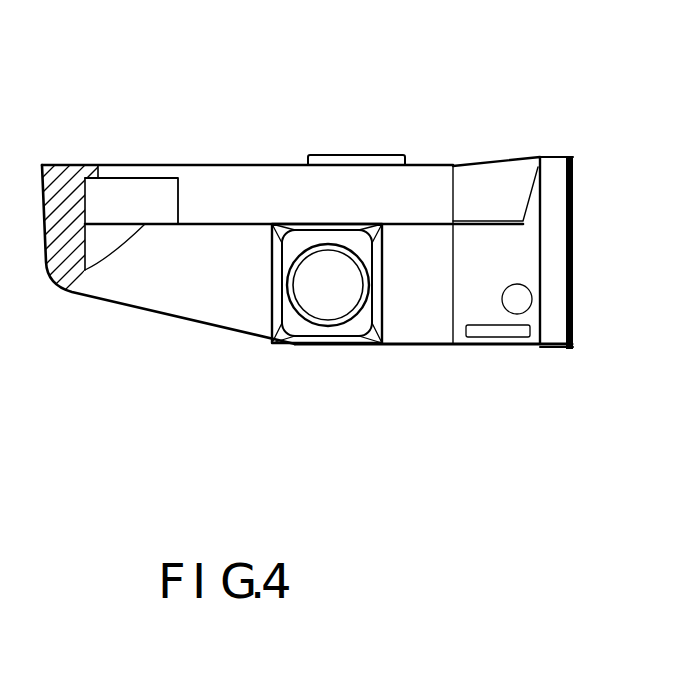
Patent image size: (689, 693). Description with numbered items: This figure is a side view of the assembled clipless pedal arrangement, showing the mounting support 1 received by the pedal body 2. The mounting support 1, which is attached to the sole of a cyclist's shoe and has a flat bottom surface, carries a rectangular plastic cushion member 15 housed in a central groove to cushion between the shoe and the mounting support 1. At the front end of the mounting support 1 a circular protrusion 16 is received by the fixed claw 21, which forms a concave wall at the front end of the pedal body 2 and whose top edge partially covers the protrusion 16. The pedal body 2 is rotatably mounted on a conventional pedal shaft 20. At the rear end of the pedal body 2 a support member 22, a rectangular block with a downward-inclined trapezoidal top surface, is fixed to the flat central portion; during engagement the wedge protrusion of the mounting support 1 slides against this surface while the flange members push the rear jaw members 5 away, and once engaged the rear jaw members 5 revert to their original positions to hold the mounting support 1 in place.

The mounting support 1 is at (278, 153).
The pedal body 2 is at (148, 317).
The rear jaw member 5 is at (470, 292).
The cushion member 15 is at (362, 148).
The circular protrusion 16 is at (110, 202).
The pedal shaft 20 is at (322, 298).
The fixed claw 21 is at (85, 212).
The support member 22 is at (560, 285).